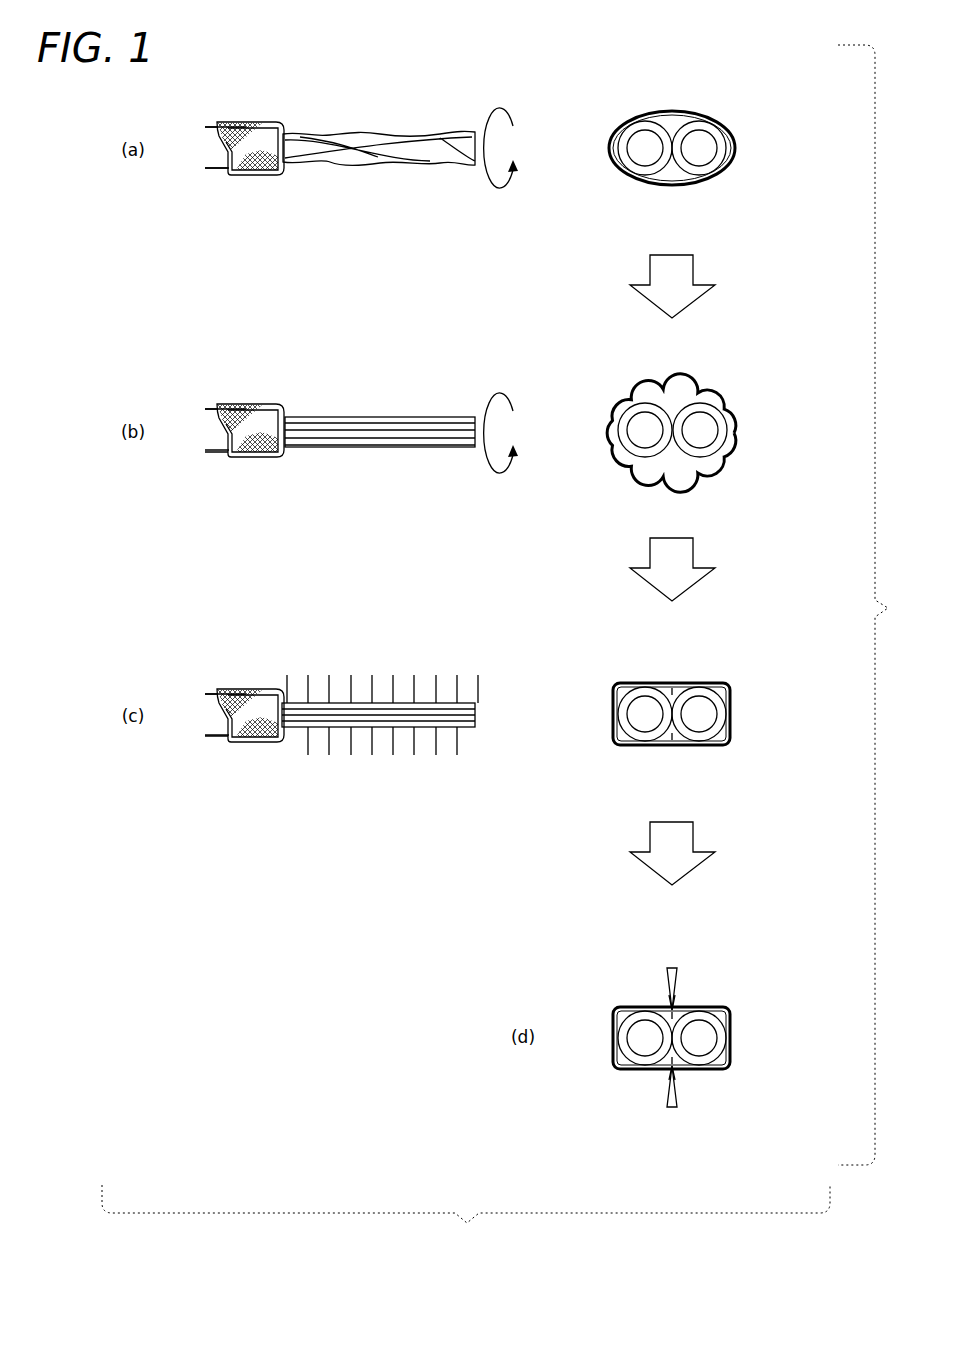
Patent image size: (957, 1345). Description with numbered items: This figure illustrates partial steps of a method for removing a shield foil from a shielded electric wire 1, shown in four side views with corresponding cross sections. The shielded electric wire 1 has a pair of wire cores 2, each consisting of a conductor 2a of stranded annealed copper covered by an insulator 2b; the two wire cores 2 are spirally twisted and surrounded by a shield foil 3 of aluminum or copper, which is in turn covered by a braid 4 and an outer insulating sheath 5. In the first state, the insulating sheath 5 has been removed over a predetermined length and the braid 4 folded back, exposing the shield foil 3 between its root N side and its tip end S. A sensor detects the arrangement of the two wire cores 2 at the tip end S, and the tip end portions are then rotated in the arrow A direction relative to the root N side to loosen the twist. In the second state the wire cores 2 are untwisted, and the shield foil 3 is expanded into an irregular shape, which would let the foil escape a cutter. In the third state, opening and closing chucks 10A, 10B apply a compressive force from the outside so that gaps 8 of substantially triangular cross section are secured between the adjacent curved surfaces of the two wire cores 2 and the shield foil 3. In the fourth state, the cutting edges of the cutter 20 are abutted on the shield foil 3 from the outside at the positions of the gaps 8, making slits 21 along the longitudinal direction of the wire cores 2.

The shielded electric wire 1 is at (289, 748).
The wire core 2 is at (716, 1031).
The conductor 2a is at (705, 1044).
The insulator 2b is at (730, 1043).
The shield foil 3 is at (730, 1026).
The braid 4 is at (260, 747).
The insulating sheath 5 is at (217, 739).
The gap 8 is at (670, 1062).
The opening and closing chuck 10A is at (388, 693).
The opening and closing chuck 10B is at (405, 742).
The cutter 20 is at (680, 1105).
The slit 21 is at (682, 1075).
The root N is at (297, 172).
The tip end S is at (462, 176).
The arrow A direction A is at (510, 285).